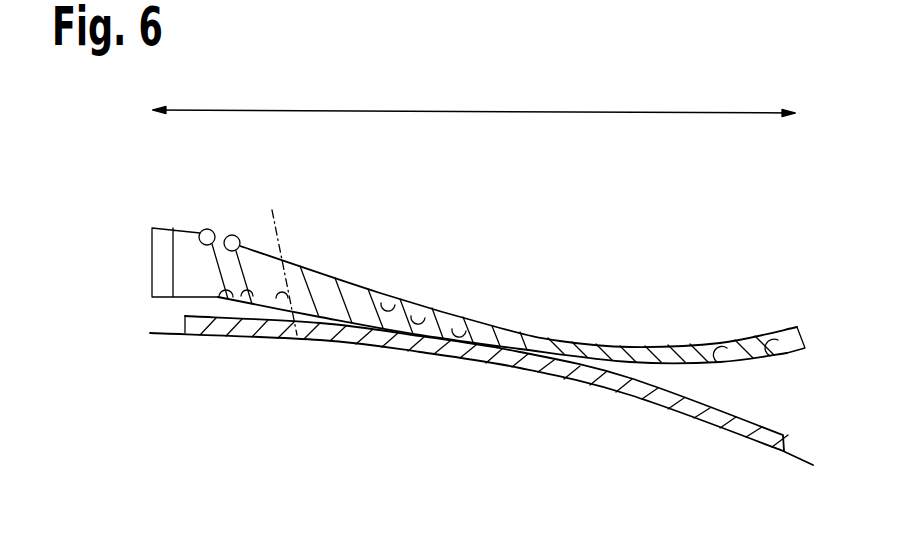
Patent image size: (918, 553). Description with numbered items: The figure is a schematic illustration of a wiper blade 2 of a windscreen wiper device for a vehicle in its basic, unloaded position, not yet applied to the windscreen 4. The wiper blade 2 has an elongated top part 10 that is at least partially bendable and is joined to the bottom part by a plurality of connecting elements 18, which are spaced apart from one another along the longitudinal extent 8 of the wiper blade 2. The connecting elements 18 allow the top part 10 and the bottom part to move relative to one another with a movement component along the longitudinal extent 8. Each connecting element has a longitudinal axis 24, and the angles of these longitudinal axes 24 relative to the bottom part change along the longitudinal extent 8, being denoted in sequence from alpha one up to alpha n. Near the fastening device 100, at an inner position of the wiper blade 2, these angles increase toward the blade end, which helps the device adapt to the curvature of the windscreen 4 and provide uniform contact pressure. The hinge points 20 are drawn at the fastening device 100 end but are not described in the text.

The wiper blade 2 is at (655, 266).
The windscreen 4 is at (653, 408).
The longitudinal extent 8 is at (475, 110).
The top part 10 is at (511, 285).
The connecting elements 18 is at (390, 297).
The joints / hinge points 20 is at (214, 229).
The longitudinal axes 24 is at (281, 251).
The fastening device 100 is at (164, 272).